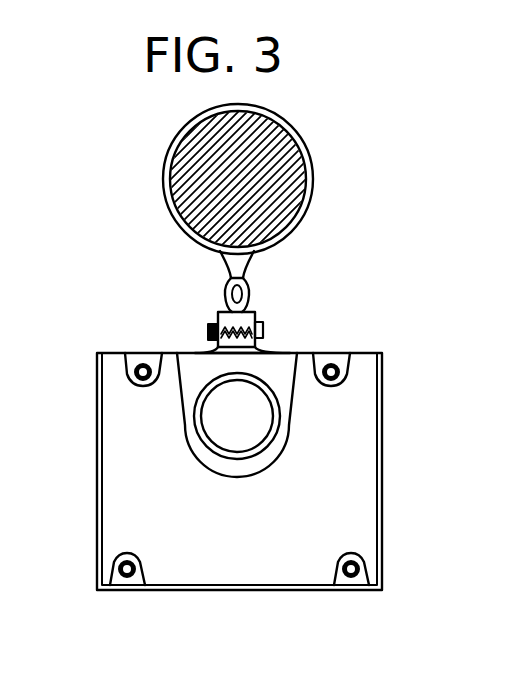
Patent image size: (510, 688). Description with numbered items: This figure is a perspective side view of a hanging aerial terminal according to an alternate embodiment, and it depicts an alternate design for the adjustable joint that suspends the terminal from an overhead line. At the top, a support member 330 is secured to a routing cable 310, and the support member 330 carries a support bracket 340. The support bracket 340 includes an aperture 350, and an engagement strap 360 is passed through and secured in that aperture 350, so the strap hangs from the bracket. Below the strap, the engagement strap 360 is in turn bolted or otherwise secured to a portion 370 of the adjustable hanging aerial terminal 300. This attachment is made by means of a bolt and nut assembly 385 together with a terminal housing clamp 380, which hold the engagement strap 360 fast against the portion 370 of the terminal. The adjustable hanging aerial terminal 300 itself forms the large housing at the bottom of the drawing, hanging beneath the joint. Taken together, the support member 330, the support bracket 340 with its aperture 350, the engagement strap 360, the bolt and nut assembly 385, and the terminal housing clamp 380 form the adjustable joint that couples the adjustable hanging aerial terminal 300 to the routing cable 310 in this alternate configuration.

The adjustable hanging aerial terminal 300 is at (95, 609).
The routing cable 310 is at (188, 182).
The support member 330 is at (186, 129).
The support bracket 340 is at (244, 258).
The aperture 350 is at (247, 275).
The engagement strap 360 is at (230, 296).
The portion of the adjustable hanging aerial terminal 370 is at (219, 318).
The terminal housing clamp 380 is at (278, 348).
The bolt and nut assembly 385 is at (262, 321).